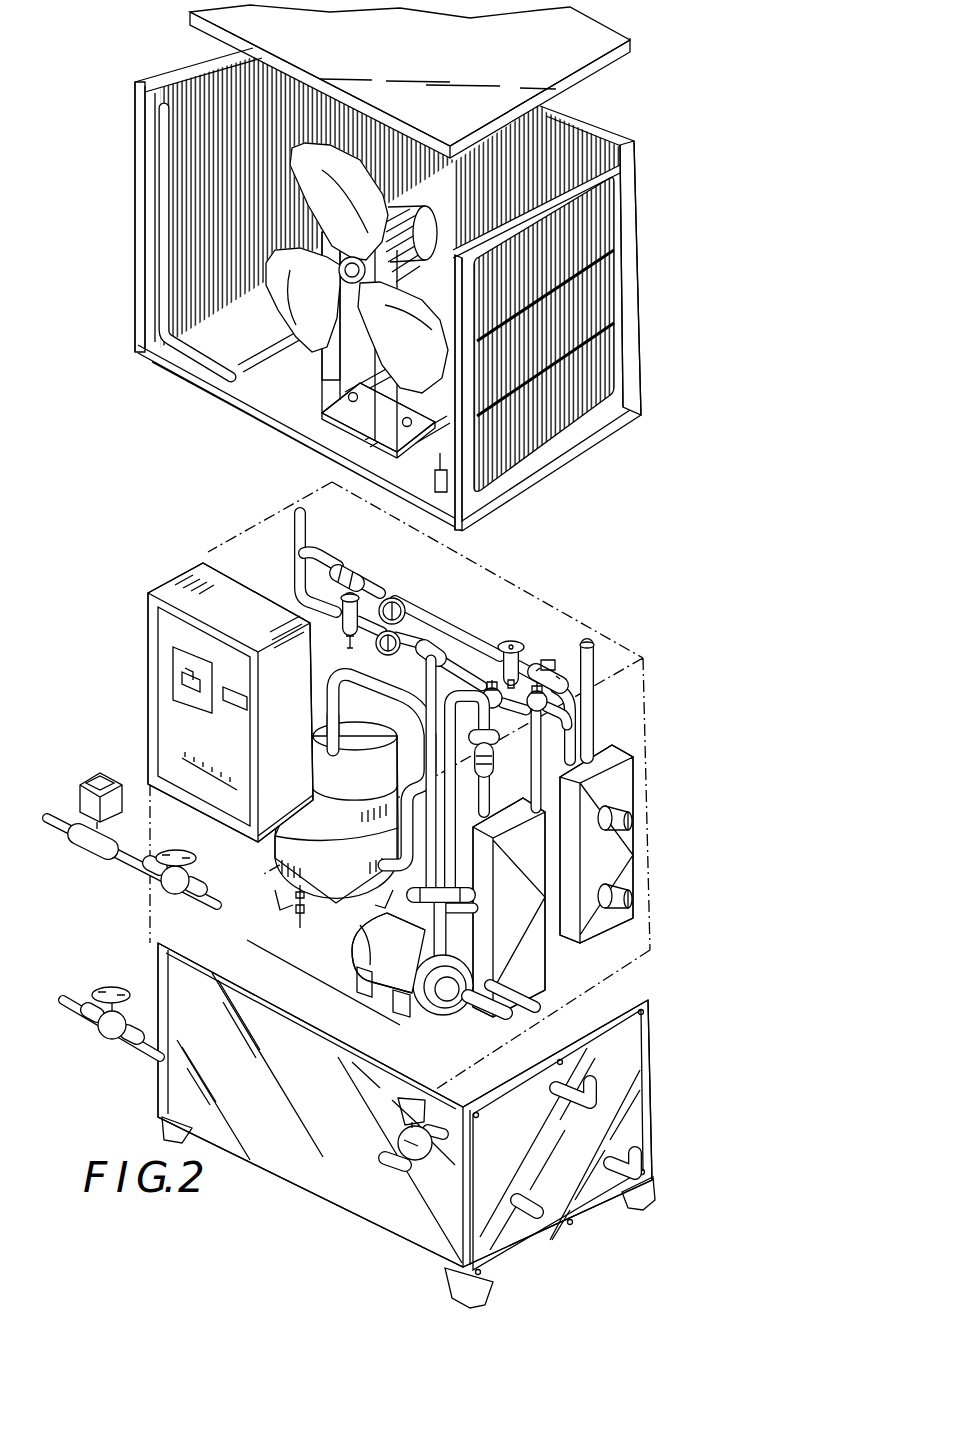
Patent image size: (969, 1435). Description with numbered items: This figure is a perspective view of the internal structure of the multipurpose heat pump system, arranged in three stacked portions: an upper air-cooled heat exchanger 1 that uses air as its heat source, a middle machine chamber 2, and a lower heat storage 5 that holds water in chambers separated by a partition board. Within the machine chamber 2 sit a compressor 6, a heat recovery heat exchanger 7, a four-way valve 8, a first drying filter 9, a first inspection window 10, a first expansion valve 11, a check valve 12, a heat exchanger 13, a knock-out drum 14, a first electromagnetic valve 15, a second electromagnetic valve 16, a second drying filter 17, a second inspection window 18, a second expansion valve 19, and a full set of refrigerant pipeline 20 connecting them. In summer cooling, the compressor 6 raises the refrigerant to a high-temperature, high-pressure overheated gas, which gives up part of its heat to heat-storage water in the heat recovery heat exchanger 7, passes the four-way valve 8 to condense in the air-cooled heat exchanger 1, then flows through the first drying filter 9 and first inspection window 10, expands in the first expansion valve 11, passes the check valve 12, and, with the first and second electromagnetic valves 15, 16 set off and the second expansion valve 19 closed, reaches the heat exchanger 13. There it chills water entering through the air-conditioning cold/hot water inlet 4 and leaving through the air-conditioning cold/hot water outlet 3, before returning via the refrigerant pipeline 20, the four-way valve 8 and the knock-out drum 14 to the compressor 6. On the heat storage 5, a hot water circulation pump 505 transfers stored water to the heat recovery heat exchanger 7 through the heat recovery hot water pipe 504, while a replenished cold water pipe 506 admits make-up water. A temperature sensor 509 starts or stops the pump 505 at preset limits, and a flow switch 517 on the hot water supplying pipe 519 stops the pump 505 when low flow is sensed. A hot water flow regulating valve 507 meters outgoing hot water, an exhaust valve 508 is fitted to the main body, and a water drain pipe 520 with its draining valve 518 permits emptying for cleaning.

The air-cooled heat exchanger 1 is at (640, 248).
The machine chamber 2 is at (628, 685).
The air-conditioning cold/hot water outlet 3 is at (617, 810).
The air-conditioning cold/hot water inlet 4 is at (628, 898).
The heat storage 5 is at (253, 1172).
The compressor 6 is at (293, 857).
The heat recovery heat exchanger 7 is at (560, 938).
The four-way valve 8 is at (497, 758).
The first drying filter 9 is at (347, 572).
The first inspection window 10 is at (403, 597).
The first expansion valve 11 is at (510, 640).
The check valve 12 is at (546, 660).
The heat exchanger 13 is at (610, 857).
The knock-out drum 14 is at (372, 918).
The first electromagnetic valve 15 is at (480, 690).
The second electromagnetic valve 16 is at (537, 717).
The second drying filter 17 is at (424, 660).
The second inspection window 18 is at (387, 641).
The second expansion valve 19 is at (347, 617).
The refrigerant pipeline 20 is at (297, 540).
The heat recovery hot water pipe 504 is at (640, 1157).
The hot water circulation pump 505 is at (375, 958).
The replenished cold water pipe 506 is at (533, 1220).
The hot water flow regulating valve 507 is at (153, 880).
The exhaust valve 508 is at (400, 1110).
The temperature sensor 509 is at (298, 920).
The flow switch 517 is at (92, 773).
The draining valve 518 is at (110, 1037).
The hot water supplying pipe 519 is at (52, 833).
The water drain pipe 520 is at (70, 997).